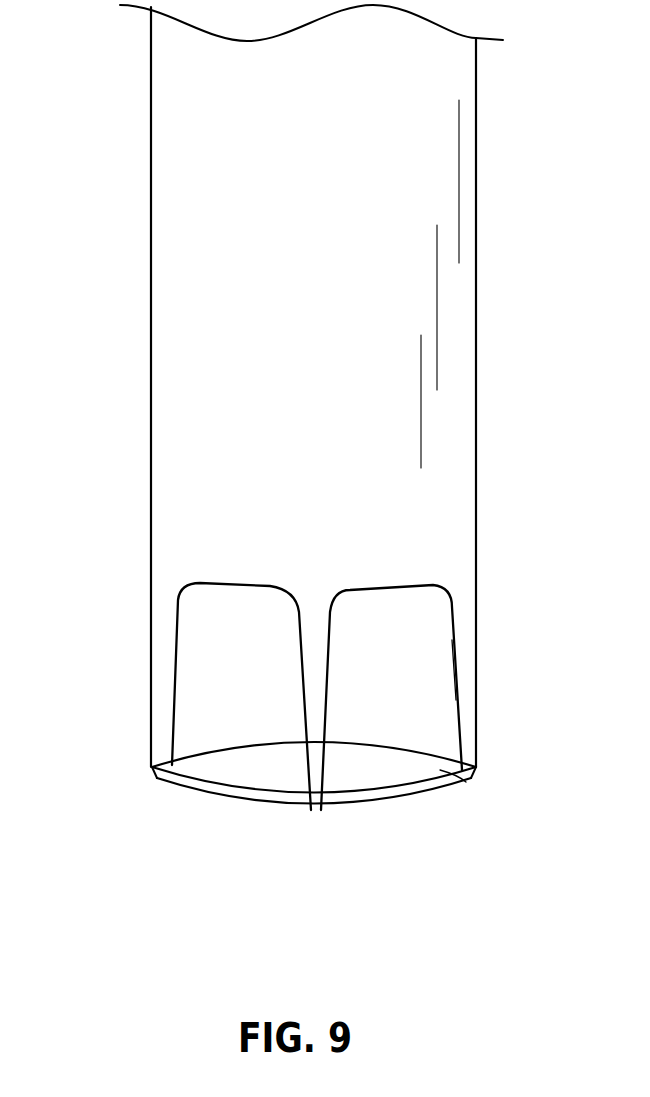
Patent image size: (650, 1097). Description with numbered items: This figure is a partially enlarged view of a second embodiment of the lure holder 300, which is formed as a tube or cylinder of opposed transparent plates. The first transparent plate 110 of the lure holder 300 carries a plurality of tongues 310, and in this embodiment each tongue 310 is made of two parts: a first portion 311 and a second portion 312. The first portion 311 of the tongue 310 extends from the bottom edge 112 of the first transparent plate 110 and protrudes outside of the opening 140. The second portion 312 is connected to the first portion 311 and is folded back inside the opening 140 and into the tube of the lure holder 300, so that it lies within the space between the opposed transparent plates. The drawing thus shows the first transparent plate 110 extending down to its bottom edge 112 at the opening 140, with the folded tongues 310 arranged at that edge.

The first transparent plate 110 is at (183, 545).
The bottom edge 112 is at (172, 795).
The opening 140 is at (277, 770).
The lure holder 300 is at (118, 191).
The tongue 310 is at (268, 715).
The first portion 311 is at (467, 783).
The second portion 312 is at (455, 678).